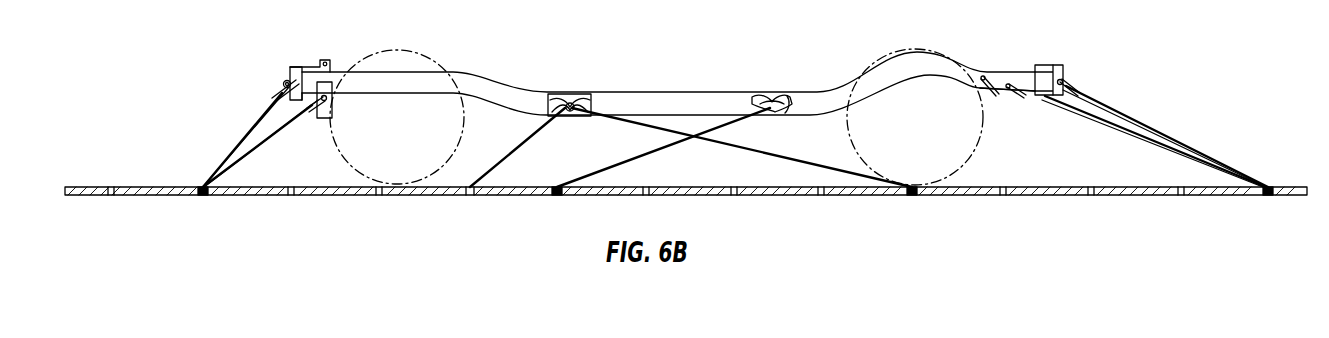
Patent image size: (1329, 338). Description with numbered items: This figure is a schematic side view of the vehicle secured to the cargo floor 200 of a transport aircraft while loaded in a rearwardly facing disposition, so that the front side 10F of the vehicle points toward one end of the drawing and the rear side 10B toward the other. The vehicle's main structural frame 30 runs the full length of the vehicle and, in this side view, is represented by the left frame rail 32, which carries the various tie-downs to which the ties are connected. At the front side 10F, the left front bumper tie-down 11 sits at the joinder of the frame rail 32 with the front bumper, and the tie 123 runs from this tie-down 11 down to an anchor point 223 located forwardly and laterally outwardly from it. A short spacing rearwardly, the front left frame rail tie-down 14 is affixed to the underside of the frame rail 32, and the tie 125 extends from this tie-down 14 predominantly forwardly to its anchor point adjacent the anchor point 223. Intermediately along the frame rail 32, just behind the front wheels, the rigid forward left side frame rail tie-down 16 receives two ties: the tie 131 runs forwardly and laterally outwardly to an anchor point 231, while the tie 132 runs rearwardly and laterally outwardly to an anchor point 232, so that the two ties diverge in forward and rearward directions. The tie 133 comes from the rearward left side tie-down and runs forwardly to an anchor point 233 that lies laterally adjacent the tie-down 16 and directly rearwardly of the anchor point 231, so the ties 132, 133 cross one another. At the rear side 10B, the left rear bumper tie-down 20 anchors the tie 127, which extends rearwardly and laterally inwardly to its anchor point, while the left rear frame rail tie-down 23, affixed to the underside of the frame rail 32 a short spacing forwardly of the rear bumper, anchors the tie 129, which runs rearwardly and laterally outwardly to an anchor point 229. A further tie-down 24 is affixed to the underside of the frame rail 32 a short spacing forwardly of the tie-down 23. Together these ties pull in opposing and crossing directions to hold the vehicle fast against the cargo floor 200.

The front side 10F is at (158, 86).
The rear side 10B is at (1214, 85).
The left front bumper tie-down 11 is at (273, 100).
The front left frame rail tie-down 14 is at (318, 118).
The forward left side frame rail tie-down 16 is at (562, 99).
The left rear bumper tie-down 20 is at (1080, 93).
The left rear frame rail tie-down 23 is at (1016, 84).
The tie-down 24 is at (987, 77).
The main structural frame 30 is at (665, 91).
The left frame rail 32 is at (720, 103).
The tie 123 is at (245, 134).
The tie 125 is at (240, 160).
The tie 127 is at (1147, 125).
The tie 129 is at (1080, 117).
The tie 131 is at (530, 135).
The tie 132 is at (757, 148).
The tie 133 is at (625, 160).
The deck / ground surface 200 is at (152, 187).
The anchor point 223 is at (203, 196).
The anchor point 229 is at (1268, 196).
The anchor point 231 is at (470, 196).
The anchor point 232 is at (913, 196).
The anchor point 233 is at (558, 196).